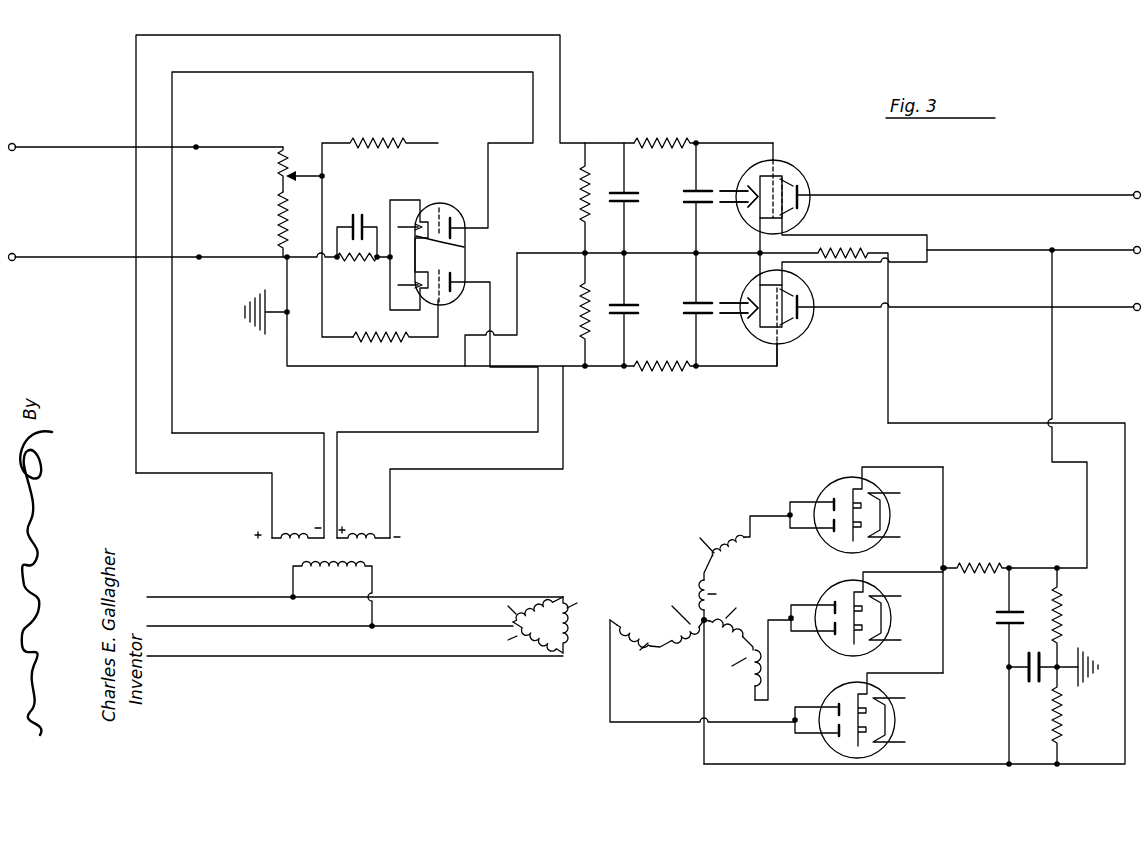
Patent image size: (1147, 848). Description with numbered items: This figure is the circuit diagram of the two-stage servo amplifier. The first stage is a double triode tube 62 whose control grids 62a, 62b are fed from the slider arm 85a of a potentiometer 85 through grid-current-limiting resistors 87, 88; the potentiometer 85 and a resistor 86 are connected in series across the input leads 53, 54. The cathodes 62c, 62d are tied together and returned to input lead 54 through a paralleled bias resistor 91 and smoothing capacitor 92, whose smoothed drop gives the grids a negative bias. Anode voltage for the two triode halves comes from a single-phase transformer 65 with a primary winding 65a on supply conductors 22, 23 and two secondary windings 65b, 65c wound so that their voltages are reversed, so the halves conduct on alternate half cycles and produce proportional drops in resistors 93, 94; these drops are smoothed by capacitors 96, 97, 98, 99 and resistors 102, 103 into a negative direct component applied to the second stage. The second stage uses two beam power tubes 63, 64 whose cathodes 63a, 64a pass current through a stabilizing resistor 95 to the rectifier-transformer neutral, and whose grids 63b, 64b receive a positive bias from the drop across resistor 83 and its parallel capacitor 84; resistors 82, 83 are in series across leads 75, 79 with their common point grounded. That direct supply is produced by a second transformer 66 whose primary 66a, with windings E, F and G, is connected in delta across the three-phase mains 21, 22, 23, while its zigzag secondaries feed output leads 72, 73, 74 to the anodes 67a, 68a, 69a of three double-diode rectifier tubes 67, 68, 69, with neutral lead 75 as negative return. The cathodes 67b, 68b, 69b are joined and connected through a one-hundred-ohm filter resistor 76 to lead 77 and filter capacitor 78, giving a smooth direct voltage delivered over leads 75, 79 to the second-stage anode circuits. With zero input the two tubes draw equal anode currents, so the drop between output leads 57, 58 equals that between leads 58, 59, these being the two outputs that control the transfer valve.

The supply main 21 is at (198, 656).
The supply main conductor 22 is at (198, 626).
The supply main conductor 23 is at (200, 597).
The input lead 53 is at (36, 147).
The input lead 54 is at (36, 257).
The output lead 57 is at (1095, 195).
The output lead 58 is at (1100, 250).
The output lead 59 is at (1102, 307).
The double triode tube 62 is at (448, 206).
The control grid 62a is at (436, 208).
The control grid 62b is at (446, 300).
The cathode 62c is at (465, 245).
The cathode 62d is at (418, 275).
The beam power tube 63 is at (793, 163).
The cathode 63a is at (758, 188).
The grid 63b is at (766, 172).
The beam power tube 64 is at (809, 329).
The cathode 64a is at (758, 296).
The grid 64b is at (762, 318).
The single-phase transformer 65 is at (320, 564).
The primary winding 65a is at (293, 551).
The secondary winding 65b is at (290, 534).
The secondary winding 65c is at (357, 534).
The second transformer 66 is at (641, 601).
The primary 66a is at (553, 595).
The rectifier tube 67 is at (826, 492).
The anode 67a is at (831, 527).
The cathode 67b is at (857, 488).
The rectifier tube 68 is at (826, 595).
The anode 68a is at (832, 630).
The cathode 68b is at (858, 591).
The rectifier tube 69 is at (825, 702).
The anode 69a is at (836, 732).
The cathode 69b is at (858, 693).
The output lead 72 is at (750, 515).
The output lead 73 is at (770, 619).
The output lead 74 is at (748, 724).
The neutral lead 75 is at (1124, 516).
The filter resistor 76 is at (963, 562).
The lead 77 is at (1012, 592).
The filter capacitor 78 is at (997, 622).
The lead 79 is at (1085, 516).
The resistor 82 is at (1063, 602).
The resistor 83 is at (1063, 718).
The capacitor 84 is at (1034, 684).
The potentiometer 85 is at (272, 172).
The slider arm 85a is at (290, 170).
The resistor 86 is at (275, 228).
The grid-current-limiting resistor 87 is at (372, 140).
The grid-current-limiting resistor 88 is at (390, 340).
The bias resistor 91 is at (358, 262).
The smoothing capacitor 92 is at (355, 214).
The resistor 93 is at (578, 194).
The resistor 94 is at (578, 306).
The stabilizing resistor 95 is at (858, 250).
The capacitor 96 is at (632, 192).
The capacitor 97 is at (632, 304).
The capacitor 98 is at (710, 207).
The capacitor 99 is at (693, 316).
The resistor 102 is at (665, 126).
The resistor 103 is at (676, 372).